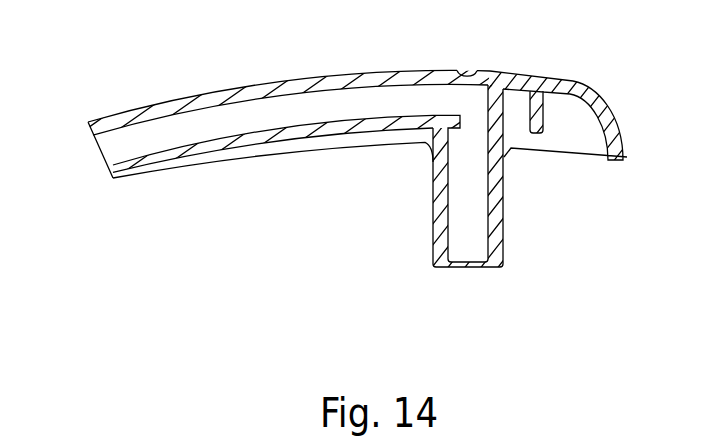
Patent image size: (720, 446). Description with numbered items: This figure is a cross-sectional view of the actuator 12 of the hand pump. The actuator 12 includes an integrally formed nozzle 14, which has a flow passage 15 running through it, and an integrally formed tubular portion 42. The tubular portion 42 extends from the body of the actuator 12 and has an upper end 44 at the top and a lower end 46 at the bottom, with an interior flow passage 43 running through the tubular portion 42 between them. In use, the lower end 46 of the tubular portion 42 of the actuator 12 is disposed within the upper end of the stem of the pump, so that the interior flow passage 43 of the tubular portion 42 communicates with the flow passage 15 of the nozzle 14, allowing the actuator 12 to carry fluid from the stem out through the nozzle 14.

The actuator 12 is at (606, 106).
The nozzle 14 is at (284, 78).
The flow passage 15 is at (110, 153).
The tubular portion 42 is at (517, 75).
The interior flow passage 43 is at (477, 163).
The upper end 44 is at (462, 69).
The lower end 46 is at (477, 227).